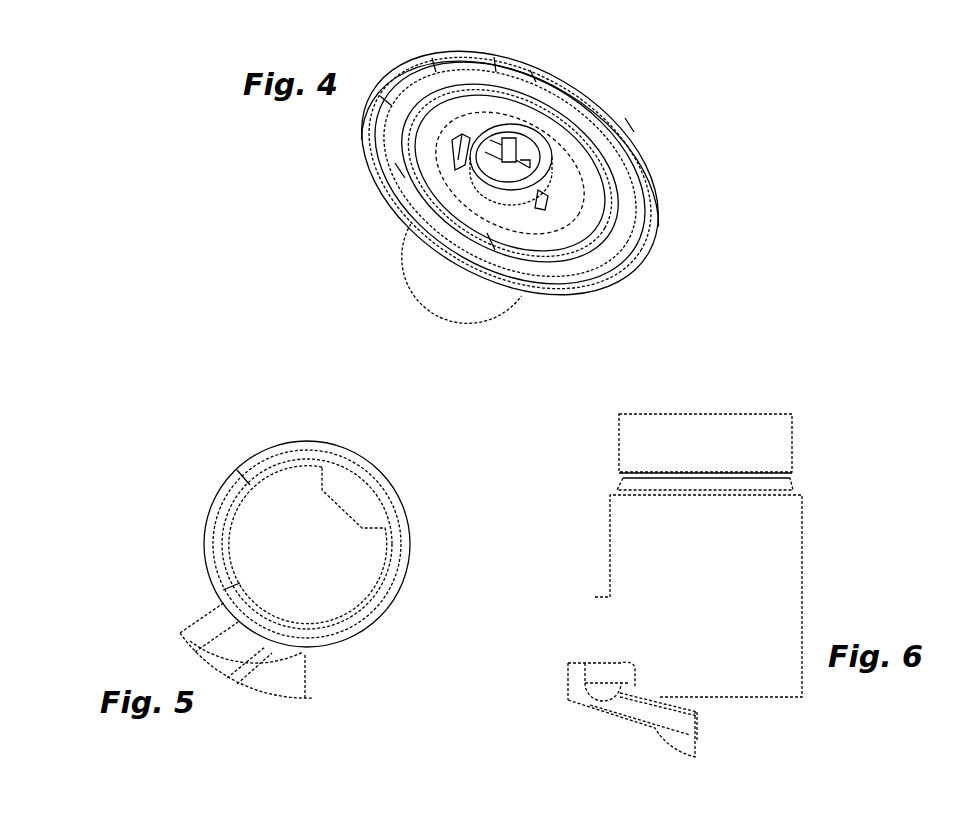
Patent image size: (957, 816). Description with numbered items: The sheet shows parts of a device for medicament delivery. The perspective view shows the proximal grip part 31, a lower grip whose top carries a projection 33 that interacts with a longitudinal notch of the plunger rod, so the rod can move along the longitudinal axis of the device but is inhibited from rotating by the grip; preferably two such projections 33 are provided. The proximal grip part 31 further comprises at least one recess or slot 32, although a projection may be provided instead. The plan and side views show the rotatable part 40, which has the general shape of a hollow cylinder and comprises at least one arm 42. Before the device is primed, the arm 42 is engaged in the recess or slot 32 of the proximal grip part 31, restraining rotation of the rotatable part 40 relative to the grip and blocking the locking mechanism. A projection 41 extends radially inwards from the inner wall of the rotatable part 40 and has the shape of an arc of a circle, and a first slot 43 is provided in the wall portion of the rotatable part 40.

In FIG. 4, the proximal grip part 31 is at (395, 290).
In FIG. 4, the recess or slot 32 is at (545, 209).
In FIG. 4, the projection 33 is at (512, 141).
In FIG. 5, the rotatable part 40 is at (190, 478).
In FIG. 6, the rotatable part 40 is at (836, 468).
In FIG. 5, the projection 41 is at (363, 505).
In FIG. 5, the arm 42 is at (278, 672).
In FIG. 6, the arm 42 is at (670, 728).
In FIG. 5, the first slot 43 is at (222, 547).